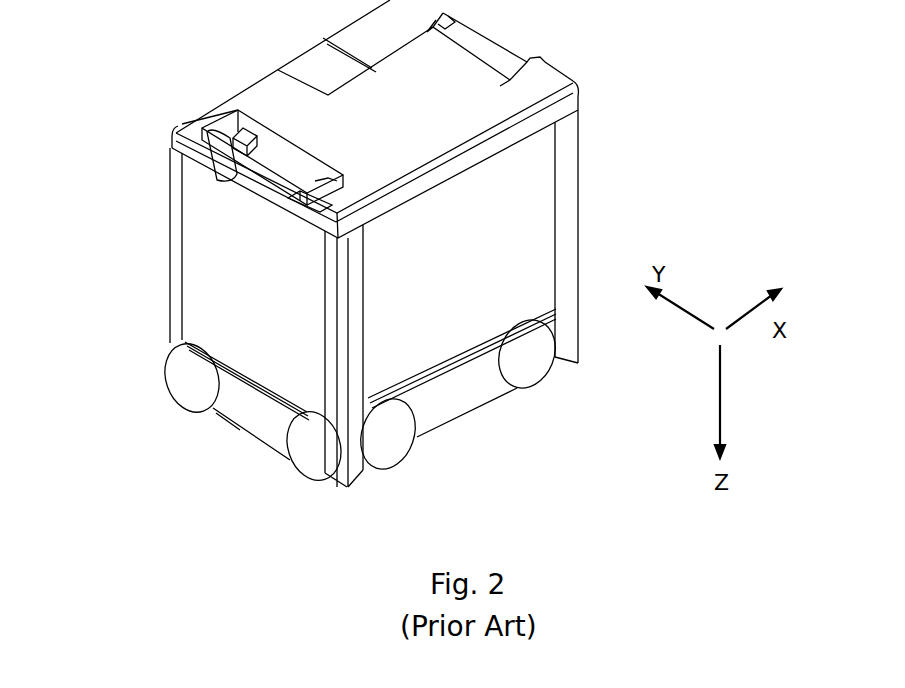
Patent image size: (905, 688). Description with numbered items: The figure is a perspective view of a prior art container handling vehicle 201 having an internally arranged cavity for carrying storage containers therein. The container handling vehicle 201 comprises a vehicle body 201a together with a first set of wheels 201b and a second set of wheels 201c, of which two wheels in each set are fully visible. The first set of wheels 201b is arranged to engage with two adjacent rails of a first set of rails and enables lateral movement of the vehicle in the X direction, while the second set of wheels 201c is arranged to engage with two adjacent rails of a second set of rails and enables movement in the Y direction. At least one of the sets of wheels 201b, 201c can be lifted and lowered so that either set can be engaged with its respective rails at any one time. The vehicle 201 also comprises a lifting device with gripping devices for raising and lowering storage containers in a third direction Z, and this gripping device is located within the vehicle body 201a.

The container handling vehicle 201 is at (455, 270).
The vehicle body 201a is at (270, 90).
The first set of wheels 201b is at (515, 425).
The second set of wheels 201c is at (208, 447).